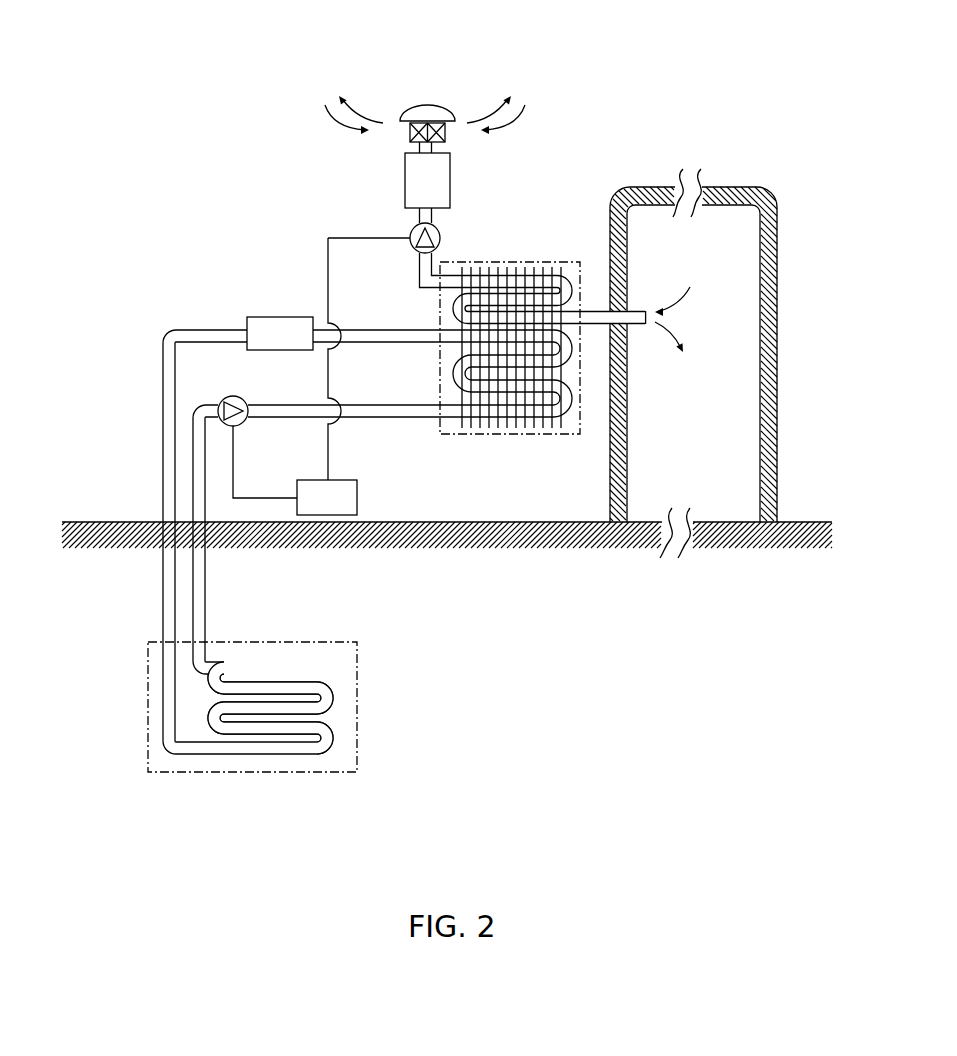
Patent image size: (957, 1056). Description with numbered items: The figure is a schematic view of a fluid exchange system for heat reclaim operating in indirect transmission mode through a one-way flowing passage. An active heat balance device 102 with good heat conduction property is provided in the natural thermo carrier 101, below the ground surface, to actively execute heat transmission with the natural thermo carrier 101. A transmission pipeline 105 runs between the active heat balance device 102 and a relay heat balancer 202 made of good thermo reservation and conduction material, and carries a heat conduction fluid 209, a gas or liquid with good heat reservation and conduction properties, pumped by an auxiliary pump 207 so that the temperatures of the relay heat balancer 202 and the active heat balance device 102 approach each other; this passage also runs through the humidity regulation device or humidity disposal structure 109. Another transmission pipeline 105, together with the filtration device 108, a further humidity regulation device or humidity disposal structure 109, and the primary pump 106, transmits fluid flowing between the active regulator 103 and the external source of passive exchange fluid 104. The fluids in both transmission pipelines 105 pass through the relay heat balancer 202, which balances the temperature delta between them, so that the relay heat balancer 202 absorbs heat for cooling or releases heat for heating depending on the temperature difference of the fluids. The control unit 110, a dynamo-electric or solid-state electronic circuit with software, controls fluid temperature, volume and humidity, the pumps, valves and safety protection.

The natural thermo carrier 101 is at (433, 550).
The active heat balance device 102 is at (248, 773).
The active regulator 103 is at (728, 312).
The external source of passive exchange fluid 104 is at (326, 107).
The transmission pipeline 105 is at (162, 476).
The primary pump 106 is at (436, 229).
The filtration device 108 is at (433, 103).
The humidity regulation device or humidity disposal structure 109 is at (405, 193).
The control unit 110 is at (360, 484).
The relay heat balancer 202 is at (518, 261).
The auxiliary pump 207 is at (242, 397).
The heat conduction fluid 209 is at (160, 676).